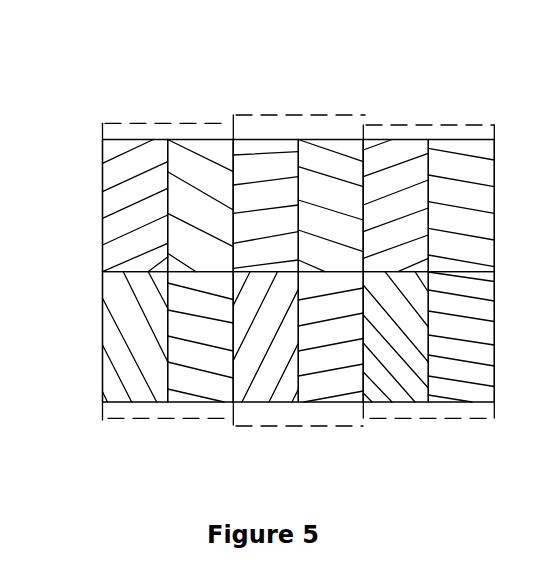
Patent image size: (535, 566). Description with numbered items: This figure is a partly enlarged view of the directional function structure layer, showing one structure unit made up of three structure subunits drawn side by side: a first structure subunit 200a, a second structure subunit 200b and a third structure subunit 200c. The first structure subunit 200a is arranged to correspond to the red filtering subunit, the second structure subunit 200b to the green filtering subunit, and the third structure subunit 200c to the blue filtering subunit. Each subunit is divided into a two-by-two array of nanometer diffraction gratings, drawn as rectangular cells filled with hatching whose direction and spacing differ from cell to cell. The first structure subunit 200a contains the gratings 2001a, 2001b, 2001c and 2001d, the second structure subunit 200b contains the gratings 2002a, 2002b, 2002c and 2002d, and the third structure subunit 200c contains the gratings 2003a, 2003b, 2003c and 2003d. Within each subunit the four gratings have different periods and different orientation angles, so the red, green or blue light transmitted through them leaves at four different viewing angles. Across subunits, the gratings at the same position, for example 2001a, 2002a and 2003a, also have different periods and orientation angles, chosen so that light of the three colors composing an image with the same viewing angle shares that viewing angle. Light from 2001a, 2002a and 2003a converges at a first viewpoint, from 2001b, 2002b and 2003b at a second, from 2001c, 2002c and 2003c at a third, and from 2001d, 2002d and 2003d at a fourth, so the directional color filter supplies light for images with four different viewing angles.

The first structure subunit 200a is at (130, 122).
The second structure subunit 200b is at (292, 115).
The third structure subunit 200c is at (427, 125).
The nanometer diffraction grating 2001a is at (108, 165).
The nanometer diffraction grating 2001b is at (177, 139).
The nanometer diffraction grating 2001c is at (108, 300).
The nanometer diffraction grating 2001d is at (194, 382).
The nanometer diffraction grating 2002a is at (255, 155).
The nanometer diffraction grating 2002b is at (338, 150).
The nanometer diffraction grating 2002c is at (250, 381).
The nanometer diffraction grating 2002d is at (324, 391).
The nanometer diffraction grating 2003a is at (393, 172).
The nanometer diffraction grating 2003b is at (480, 170).
The nanometer diffraction grating 2003c is at (392, 390).
The nanometer diffraction grating 2003d is at (457, 398).